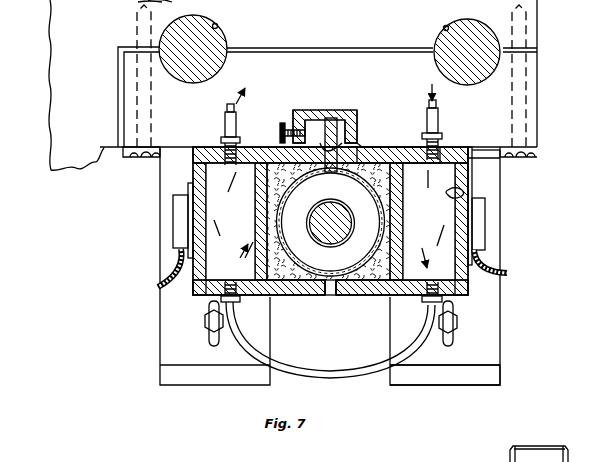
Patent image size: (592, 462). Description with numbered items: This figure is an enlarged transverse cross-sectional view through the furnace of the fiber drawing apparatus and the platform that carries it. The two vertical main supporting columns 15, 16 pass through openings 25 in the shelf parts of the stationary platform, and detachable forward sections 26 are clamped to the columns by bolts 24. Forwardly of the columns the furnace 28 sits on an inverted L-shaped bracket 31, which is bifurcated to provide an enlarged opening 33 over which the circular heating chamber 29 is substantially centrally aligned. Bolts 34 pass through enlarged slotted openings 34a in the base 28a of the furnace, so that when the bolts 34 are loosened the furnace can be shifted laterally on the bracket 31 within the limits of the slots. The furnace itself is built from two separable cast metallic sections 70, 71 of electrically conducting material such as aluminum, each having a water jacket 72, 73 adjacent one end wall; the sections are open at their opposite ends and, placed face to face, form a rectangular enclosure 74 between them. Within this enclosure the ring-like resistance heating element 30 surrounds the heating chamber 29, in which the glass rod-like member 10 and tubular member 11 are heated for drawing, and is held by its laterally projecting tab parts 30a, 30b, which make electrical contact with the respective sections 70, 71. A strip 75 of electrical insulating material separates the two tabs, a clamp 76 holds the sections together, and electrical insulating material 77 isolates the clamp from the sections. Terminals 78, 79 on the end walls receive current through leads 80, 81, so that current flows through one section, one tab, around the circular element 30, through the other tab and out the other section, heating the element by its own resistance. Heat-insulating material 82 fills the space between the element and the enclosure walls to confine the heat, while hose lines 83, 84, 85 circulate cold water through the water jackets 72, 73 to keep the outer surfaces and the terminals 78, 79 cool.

The rod-like member 10 is at (334, 208).
The tubular member 11 is at (349, 232).
The main supporting column 15 is at (185, 57).
The main supporting column 16 is at (459, 60).
The bolts 24 is at (114, 148).
The openings 25 is at (218, 26).
The detachable forward sections 26 is at (531, 103).
The furnace 28 is at (473, 176).
The base of the furnace 28a is at (160, 350).
The heating chamber 29 is at (316, 262).
The heating element 30 is at (347, 264).
The tab part 30a is at (281, 124).
The tab part 30b is at (362, 147).
The inverted L-shaped bracket 31 is at (501, 372).
The enlarged opening 33 is at (292, 366).
The bolts 34 is at (206, 316).
The slotted openings 34a is at (204, 336).
The furnace section 70 is at (452, 153).
The furnace section 71 is at (191, 155).
The water jacket 72 is at (463, 192).
The water jacket 73 is at (207, 178).
The rectangular enclosure 74 is at (422, 147).
The strip of electrical insulating material 75 is at (331, 118).
The clamp 76 is at (298, 113).
The electrical insulating material 77 is at (310, 109).
The electrical terminal 78 is at (480, 214).
The electrical terminal 79 is at (178, 213).
The lead 80 is at (492, 257).
The lead 81 is at (172, 259).
The heat-insulating material 82 is at (286, 178).
The hose line 83 is at (441, 115).
The hose line 84 is at (356, 374).
The hose line 85 is at (222, 115).